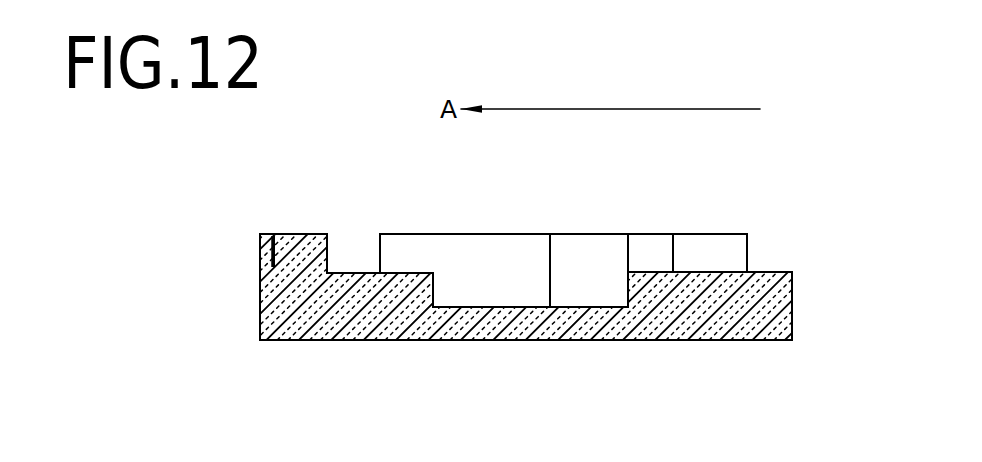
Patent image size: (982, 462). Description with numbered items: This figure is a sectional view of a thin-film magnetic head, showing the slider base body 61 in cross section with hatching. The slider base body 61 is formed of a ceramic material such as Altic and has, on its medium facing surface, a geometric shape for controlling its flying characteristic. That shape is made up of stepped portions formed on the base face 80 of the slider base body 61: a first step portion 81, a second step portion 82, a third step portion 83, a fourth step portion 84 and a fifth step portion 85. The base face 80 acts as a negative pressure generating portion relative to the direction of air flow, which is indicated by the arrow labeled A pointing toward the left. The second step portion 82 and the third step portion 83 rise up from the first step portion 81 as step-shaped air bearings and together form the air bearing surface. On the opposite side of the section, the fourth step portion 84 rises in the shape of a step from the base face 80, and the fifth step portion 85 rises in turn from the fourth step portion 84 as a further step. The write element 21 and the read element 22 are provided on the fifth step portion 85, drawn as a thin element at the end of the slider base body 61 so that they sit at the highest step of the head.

The slider base body 61 is at (307, 340).
The fifth step portion 85 is at (307, 234).
The fourth step portion 84 is at (367, 273).
The base face 80 is at (533, 307).
The second step portion 82 is at (702, 234).
The third step portion 83 is at (687, 253).
The first step portion 81 is at (757, 272).
The write element 21 is at (271, 264).
The read element 22 is at (274, 251).